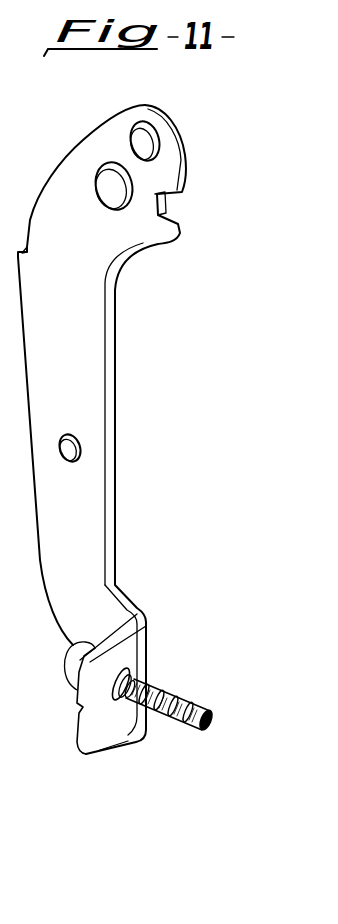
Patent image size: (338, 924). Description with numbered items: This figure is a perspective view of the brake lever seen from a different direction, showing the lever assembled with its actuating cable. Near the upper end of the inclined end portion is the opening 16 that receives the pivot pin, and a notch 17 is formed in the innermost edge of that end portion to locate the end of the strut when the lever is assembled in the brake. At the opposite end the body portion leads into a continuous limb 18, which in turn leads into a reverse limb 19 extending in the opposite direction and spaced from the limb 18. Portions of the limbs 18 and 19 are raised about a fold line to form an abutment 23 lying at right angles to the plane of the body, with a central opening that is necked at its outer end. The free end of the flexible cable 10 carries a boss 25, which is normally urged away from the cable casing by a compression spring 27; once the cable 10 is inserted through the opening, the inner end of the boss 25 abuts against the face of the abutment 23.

The cable 10 is at (206, 714).
The opening 16 is at (149, 143).
The notch 17 is at (174, 201).
The limb 18 is at (134, 641).
The reverse limb 19 is at (123, 723).
The abutment 23 is at (97, 703).
The boss 25 is at (75, 668).
The compression spring 27 is at (190, 700).